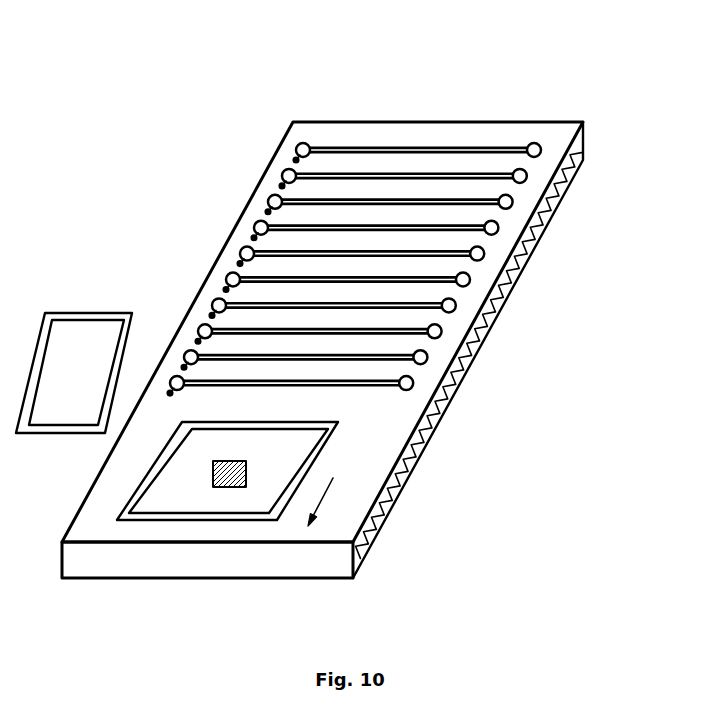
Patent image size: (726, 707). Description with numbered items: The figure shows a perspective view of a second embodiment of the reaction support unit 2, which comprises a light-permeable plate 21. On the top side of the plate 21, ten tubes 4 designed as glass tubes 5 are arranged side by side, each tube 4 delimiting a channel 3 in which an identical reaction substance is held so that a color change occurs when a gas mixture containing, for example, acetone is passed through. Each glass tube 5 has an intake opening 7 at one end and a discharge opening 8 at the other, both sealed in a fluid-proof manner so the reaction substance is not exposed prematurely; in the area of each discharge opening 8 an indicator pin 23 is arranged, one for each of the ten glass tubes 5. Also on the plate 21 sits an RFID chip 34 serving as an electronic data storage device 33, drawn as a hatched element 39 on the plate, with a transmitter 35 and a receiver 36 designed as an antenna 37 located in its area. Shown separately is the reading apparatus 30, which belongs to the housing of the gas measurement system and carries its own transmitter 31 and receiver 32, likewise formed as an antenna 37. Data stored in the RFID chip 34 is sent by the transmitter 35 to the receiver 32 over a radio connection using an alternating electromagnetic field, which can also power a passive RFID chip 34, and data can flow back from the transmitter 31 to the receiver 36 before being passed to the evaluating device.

The reaction support unit 2 is at (164, 608).
The plate 21 is at (85, 566).
The channel 3 is at (383, 202).
The tube 4 is at (383, 202).
The glass tube 5 is at (383, 202).
The discharge opening 8 is at (300, 146).
The indicator pin 23 is at (298, 161).
The intake opening 7 is at (541, 142).
The reading apparatus 30 is at (60, 393).
The transmitter 31 is at (71, 326).
The receiver 32 is at (88, 308).
The antenna 37 is at (351, 345).
The transmitter 35 is at (404, 458).
The receiver 36 is at (332, 438).
The electronic data storage device 33 is at (438, 502).
The RFID chip 34 is at (438, 502).
The chip 39 is at (246, 480).